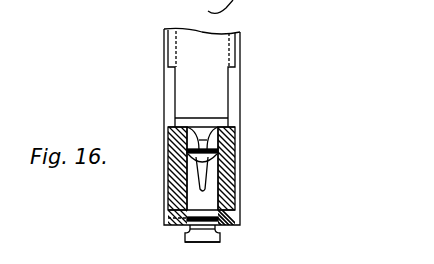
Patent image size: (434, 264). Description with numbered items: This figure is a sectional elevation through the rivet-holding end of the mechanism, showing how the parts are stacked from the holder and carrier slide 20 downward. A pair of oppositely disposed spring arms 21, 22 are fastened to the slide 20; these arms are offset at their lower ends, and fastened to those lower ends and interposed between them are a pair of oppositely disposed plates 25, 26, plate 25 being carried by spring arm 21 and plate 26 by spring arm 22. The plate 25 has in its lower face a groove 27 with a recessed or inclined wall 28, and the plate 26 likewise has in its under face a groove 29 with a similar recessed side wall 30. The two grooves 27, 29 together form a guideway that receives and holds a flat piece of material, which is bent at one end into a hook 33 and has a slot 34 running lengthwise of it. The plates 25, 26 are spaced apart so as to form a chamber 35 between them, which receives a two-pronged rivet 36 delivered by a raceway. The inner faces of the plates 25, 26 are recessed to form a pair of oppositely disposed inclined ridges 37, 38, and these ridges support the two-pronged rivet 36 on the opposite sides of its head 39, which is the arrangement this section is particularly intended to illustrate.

The holder and carrier slide 20 is at (218, 47).
The spring arm 21 is at (165, 77).
The spring arm 22 is at (235, 72).
The plate 25 is at (168, 133).
The plate 26 is at (237, 133).
The groove 27 is at (166, 214).
The recessed or inclined wall 28 is at (192, 226).
The groove 29 is at (228, 218).
The recessed side wall 30 is at (222, 237).
The hook 33 is at (212, 243).
The slot 34 is at (208, 216).
The chamber 35 is at (188, 142).
The two-pronged rivet 36 is at (203, 149).
The inclined ridge 37 is at (171, 172).
The inclined ridge 38 is at (220, 153).
The head 39 is at (201, 148).